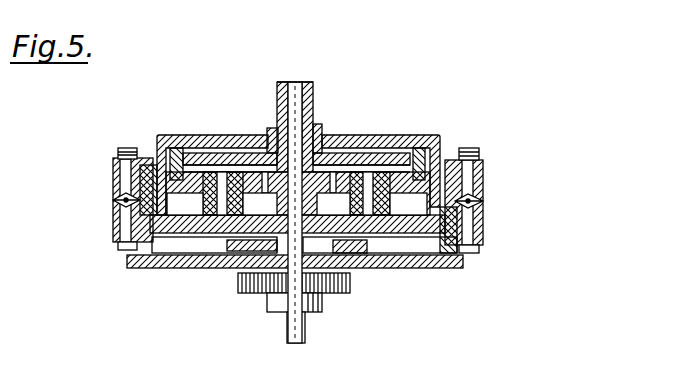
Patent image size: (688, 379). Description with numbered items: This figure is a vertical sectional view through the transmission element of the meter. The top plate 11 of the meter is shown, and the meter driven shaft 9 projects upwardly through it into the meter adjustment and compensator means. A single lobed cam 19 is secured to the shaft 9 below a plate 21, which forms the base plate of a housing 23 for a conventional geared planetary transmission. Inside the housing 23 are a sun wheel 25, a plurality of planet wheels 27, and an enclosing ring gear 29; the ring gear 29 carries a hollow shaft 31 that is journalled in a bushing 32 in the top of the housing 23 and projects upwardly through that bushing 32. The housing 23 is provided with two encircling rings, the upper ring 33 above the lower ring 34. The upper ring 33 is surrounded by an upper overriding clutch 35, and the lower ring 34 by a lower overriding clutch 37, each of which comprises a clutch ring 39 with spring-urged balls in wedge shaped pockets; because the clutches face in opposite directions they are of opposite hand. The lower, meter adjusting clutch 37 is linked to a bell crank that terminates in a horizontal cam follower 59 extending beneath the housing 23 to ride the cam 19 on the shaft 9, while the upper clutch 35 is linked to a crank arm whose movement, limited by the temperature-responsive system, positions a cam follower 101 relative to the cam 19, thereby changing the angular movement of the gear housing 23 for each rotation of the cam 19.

The meter driven shaft 9 is at (260, 205).
The top plate 11 is at (400, 262).
The single lobed cam 19 is at (327, 291).
The plate 21 is at (182, 218).
The housing 23 is at (165, 137).
The sun wheel 25 is at (334, 206).
The planet wheels 27 is at (298, 195).
The ring gear 29 is at (408, 170).
The hollow shaft 31 is at (315, 108).
The bushing 32 is at (268, 130).
The upper ring 33 is at (465, 183).
The lower ring 34 is at (455, 228).
The upper overriding clutch 35 is at (113, 175).
The lower overriding clutch 37 is at (485, 224).
The clutch ring 39 is at (113, 220).
The cam follower 59 is at (358, 250).
The cam follower 101 is at (230, 256).